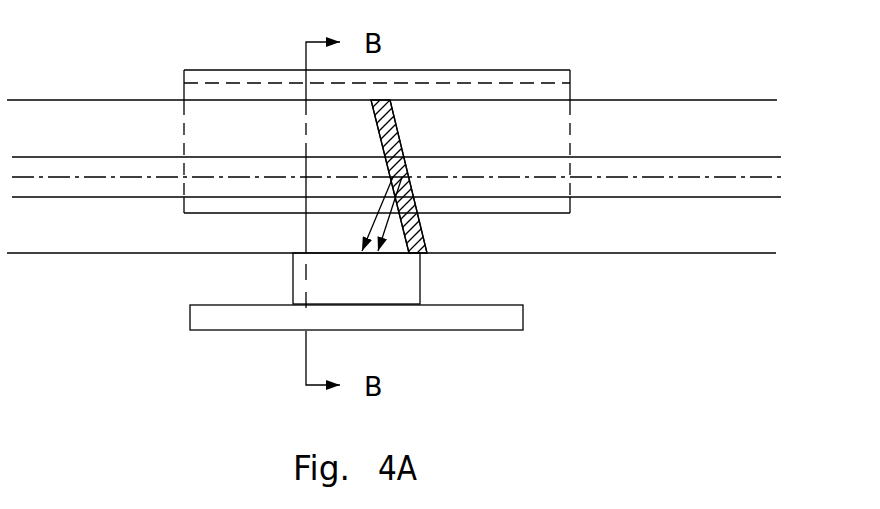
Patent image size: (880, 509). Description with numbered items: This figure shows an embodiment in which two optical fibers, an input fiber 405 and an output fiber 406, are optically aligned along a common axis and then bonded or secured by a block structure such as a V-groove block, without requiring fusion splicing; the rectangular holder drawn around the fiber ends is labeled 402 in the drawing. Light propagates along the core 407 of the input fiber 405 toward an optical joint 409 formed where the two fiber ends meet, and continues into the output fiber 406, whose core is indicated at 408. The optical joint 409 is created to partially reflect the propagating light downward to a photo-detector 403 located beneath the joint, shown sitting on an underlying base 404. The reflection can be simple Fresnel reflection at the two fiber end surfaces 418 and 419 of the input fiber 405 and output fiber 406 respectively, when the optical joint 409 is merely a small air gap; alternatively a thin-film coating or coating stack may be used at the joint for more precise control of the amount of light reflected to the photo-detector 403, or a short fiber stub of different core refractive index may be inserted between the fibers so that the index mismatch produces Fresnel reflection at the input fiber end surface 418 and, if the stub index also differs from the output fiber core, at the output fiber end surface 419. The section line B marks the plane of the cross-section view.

The waveguide cladding region 402 is at (186, 216).
The photo-detector 403 is at (423, 275).
The substrate 404 is at (526, 320).
The input optical fiber 405 is at (70, 93).
The output optical fiber 406 is at (631, 93).
The core of input fiber 407 is at (160, 183).
The second waveguide core 408 is at (624, 183).
The optical joint 409 is at (384, 98).
The input fiber end surface 418 is at (376, 127).
The output fiber end surface 419 is at (396, 126).